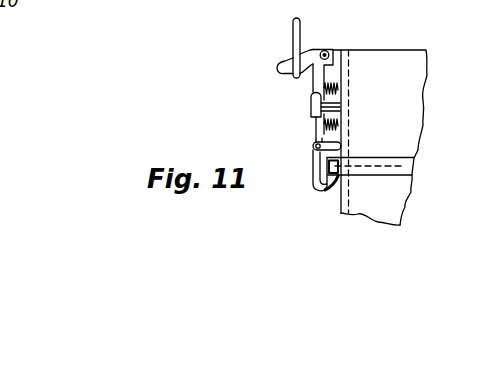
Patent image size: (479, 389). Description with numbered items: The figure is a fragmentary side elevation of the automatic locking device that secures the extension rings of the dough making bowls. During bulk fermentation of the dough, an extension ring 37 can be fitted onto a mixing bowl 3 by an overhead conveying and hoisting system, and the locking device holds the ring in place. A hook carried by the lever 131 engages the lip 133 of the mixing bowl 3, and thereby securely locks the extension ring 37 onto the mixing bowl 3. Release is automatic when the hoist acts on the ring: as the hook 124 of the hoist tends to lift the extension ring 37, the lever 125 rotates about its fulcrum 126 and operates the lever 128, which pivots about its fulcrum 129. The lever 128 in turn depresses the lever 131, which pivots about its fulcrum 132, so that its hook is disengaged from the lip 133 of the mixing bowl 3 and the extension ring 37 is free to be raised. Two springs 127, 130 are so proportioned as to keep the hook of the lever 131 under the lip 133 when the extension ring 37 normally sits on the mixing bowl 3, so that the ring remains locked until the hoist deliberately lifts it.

The mixing bowl 3 is at (398, 208).
The extension ring 37 is at (412, 99).
The hook 124 is at (300, 33).
The lever 125 is at (284, 73).
The fulcrum 126 is at (330, 52).
The spring 127 is at (341, 87).
The lever 128 is at (311, 99).
The fulcrum 129 is at (341, 107).
The spring 130 is at (338, 124).
The lever 131 is at (314, 164).
The fulcrum 132 is at (342, 148).
The lip 133 is at (337, 182).